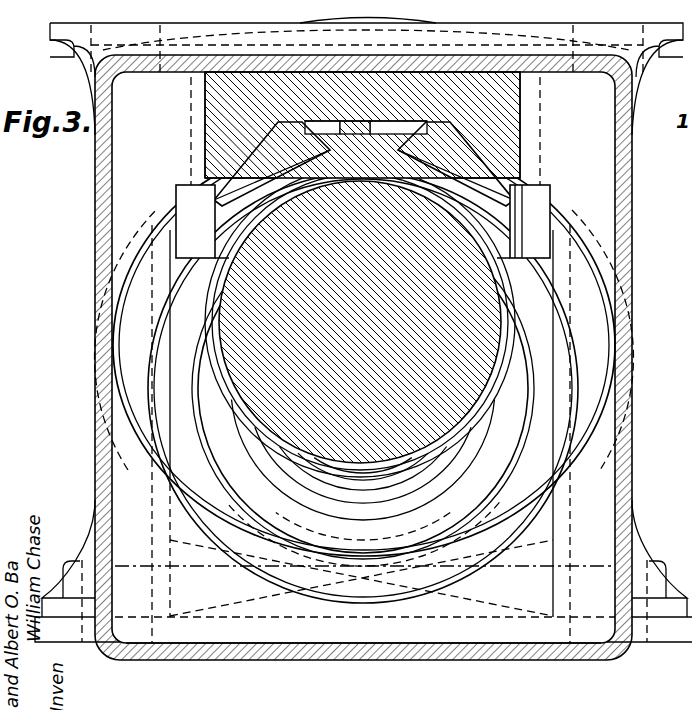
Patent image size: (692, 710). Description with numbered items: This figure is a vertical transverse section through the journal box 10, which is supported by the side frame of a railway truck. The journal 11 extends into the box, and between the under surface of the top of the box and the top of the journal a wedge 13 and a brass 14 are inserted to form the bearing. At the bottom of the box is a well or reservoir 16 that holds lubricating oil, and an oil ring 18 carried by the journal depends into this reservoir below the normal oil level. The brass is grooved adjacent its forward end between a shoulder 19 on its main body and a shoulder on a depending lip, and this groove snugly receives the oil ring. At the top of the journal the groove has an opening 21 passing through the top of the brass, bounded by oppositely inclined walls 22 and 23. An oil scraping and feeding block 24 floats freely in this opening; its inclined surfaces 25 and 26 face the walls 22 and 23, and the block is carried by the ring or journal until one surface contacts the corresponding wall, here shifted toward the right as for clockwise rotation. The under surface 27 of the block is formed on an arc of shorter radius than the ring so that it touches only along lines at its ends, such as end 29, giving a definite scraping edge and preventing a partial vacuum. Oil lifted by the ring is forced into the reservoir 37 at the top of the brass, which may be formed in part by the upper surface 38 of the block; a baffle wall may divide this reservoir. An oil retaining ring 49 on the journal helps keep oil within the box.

The journal box 10 is at (630, 225).
The journal 11 is at (238, 340).
The wedge 13 is at (495, 128).
The brass 14 is at (520, 170).
The well or reservoir 16 is at (295, 632).
The oil ring 18 is at (561, 300).
The shoulder 19 is at (548, 212).
The opening 21 is at (351, 128).
The inclined wall 22 is at (220, 152).
The inclined wall 23 is at (488, 147).
The oil scraping and feeding block 24 is at (371, 142).
The inclined surface 25 is at (218, 172).
The inclined surface 26 is at (470, 130).
The under surface 27 is at (392, 165).
The end of the block 29 is at (215, 185).
The reservoir 37 is at (213, 118).
The upper surface 38 is at (387, 197).
The oil retaining ring 49 is at (435, 502).